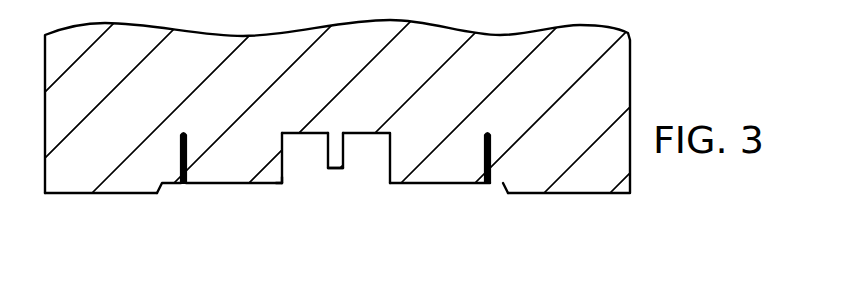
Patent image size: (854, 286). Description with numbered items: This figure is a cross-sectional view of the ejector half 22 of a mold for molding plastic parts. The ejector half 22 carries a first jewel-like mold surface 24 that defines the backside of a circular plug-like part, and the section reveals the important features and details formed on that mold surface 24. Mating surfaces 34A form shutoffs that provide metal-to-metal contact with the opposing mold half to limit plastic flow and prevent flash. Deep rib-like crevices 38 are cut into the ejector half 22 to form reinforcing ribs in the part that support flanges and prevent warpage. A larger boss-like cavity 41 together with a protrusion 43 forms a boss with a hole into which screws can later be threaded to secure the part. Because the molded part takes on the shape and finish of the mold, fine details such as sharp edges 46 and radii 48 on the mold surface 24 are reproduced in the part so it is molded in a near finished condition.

The ejector half 22 is at (633, 87).
The first jewel-like mold surface 24 is at (425, 185).
The mating surface 34A is at (157, 195).
The crevice 38 is at (178, 153).
The boss-like cavity 41 is at (287, 148).
The protrusion 43 is at (338, 157).
The sharp edge 46 is at (281, 185).
The radius 48 is at (160, 182).